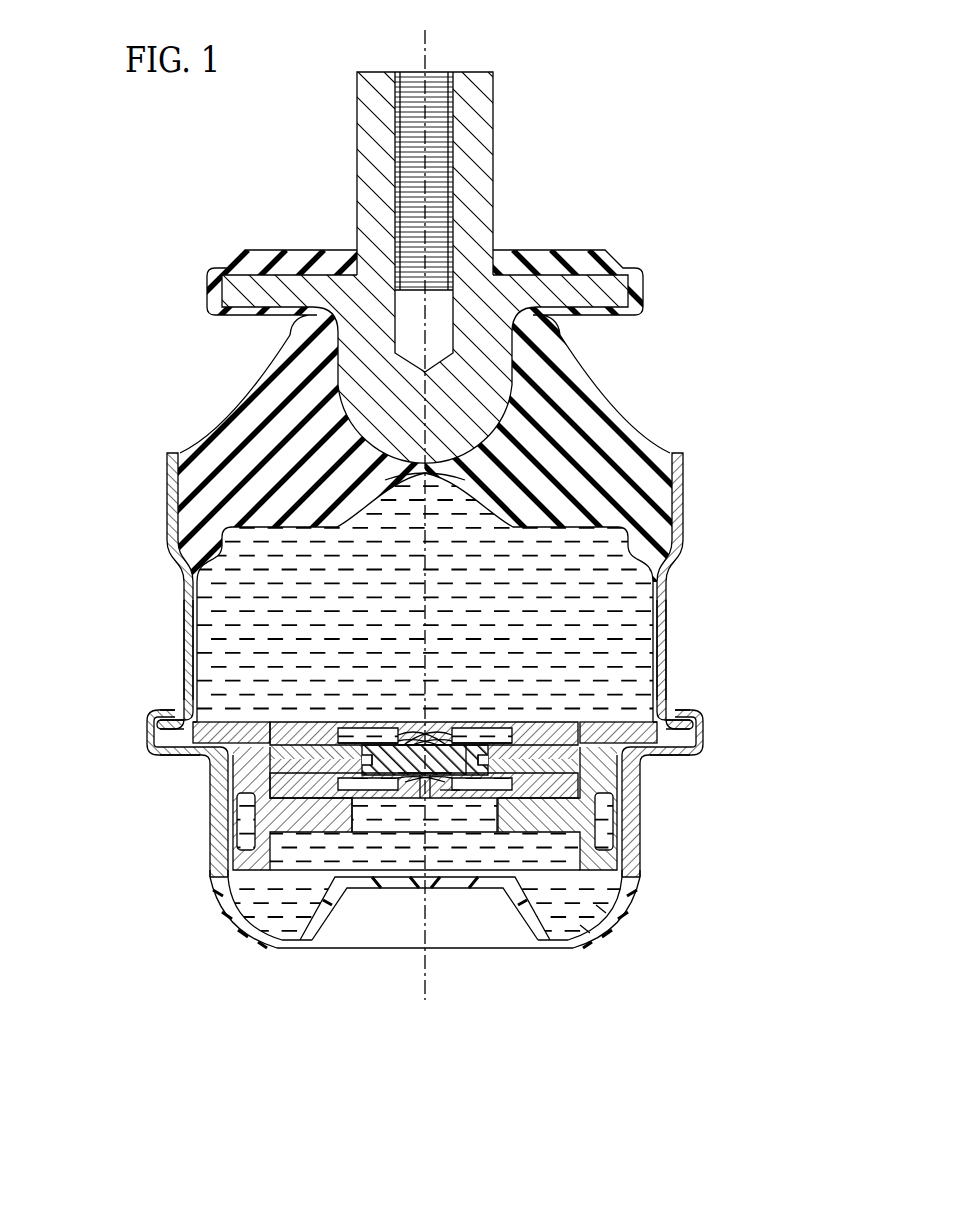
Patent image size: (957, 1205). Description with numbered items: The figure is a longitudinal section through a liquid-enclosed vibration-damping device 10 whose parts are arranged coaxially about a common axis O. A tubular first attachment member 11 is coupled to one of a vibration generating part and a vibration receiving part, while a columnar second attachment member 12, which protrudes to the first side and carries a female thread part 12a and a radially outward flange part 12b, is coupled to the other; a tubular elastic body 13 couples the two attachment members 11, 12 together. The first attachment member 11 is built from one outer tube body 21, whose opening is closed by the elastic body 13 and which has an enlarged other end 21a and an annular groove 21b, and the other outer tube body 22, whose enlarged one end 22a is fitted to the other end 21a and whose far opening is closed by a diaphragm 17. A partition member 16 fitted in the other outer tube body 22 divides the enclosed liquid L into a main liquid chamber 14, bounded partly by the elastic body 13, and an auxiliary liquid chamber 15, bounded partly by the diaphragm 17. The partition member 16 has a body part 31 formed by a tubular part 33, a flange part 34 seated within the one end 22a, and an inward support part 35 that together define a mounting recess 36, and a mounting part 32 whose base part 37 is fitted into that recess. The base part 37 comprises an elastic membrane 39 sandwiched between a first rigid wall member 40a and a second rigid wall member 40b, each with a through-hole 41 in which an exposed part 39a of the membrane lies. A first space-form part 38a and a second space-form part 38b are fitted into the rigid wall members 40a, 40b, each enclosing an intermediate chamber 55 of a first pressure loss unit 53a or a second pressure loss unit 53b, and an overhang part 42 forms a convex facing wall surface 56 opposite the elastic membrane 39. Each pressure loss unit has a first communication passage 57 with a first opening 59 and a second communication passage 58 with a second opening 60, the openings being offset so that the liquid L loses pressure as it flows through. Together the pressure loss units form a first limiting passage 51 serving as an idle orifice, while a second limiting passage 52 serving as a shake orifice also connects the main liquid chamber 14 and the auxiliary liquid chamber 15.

The vibration-damping device 10 is at (688, 118).
The first attachment member 11 is at (700, 712).
The second attachment member 12 is at (494, 130).
The female thread part 12a is at (441, 82).
The flange part 12b is at (522, 272).
The elastic body 13 is at (603, 408).
The main liquid chamber 14 is at (600, 597).
The auxiliary liquid chamber 15 is at (582, 903).
The partition member 16 is at (632, 901).
The diaphragm 17 is at (606, 922).
The one outer tube body 21 is at (688, 493).
The other end of the one outer tube body 21a is at (168, 735).
The annular groove 21b is at (668, 560).
The other outer tube body 22 is at (642, 778).
The one end of the other outer tube body 22a is at (704, 739).
The body part 31 is at (759, 868).
The mounting part 32 is at (112, 768).
The tubular part 33 is at (617, 784).
The flange part 34 is at (660, 733).
The support part 35 is at (632, 867).
The mounting recess 36 is at (652, 716).
The base part 37 is at (150, 797).
The first space-form part 38a is at (300, 736).
The second space-form part 38b is at (330, 778).
The elastic membrane 39 is at (348, 800).
The exposed part 39a is at (350, 735).
The first rigid wall member 40a is at (355, 749).
The second rigid wall member 40b is at (355, 771).
The through-hole 41 is at (372, 760).
The overhang part 42 is at (449, 742).
The first limiting passage 51 is at (451, 792).
The second limiting passage 52 is at (609, 824).
The first pressure loss unit 53a is at (130, 574).
The second pressure loss unit 53b is at (418, 1000).
The intermediate chamber 55 is at (400, 750).
The facing wall surface 56 is at (472, 741).
The first communication passage 57 is at (397, 734).
The second communication passage 58 is at (422, 780).
The first opening 59 is at (437, 726).
The second opening 60 is at (437, 781).
The liquid L is at (243, 578).
The axis O is at (418, 52).